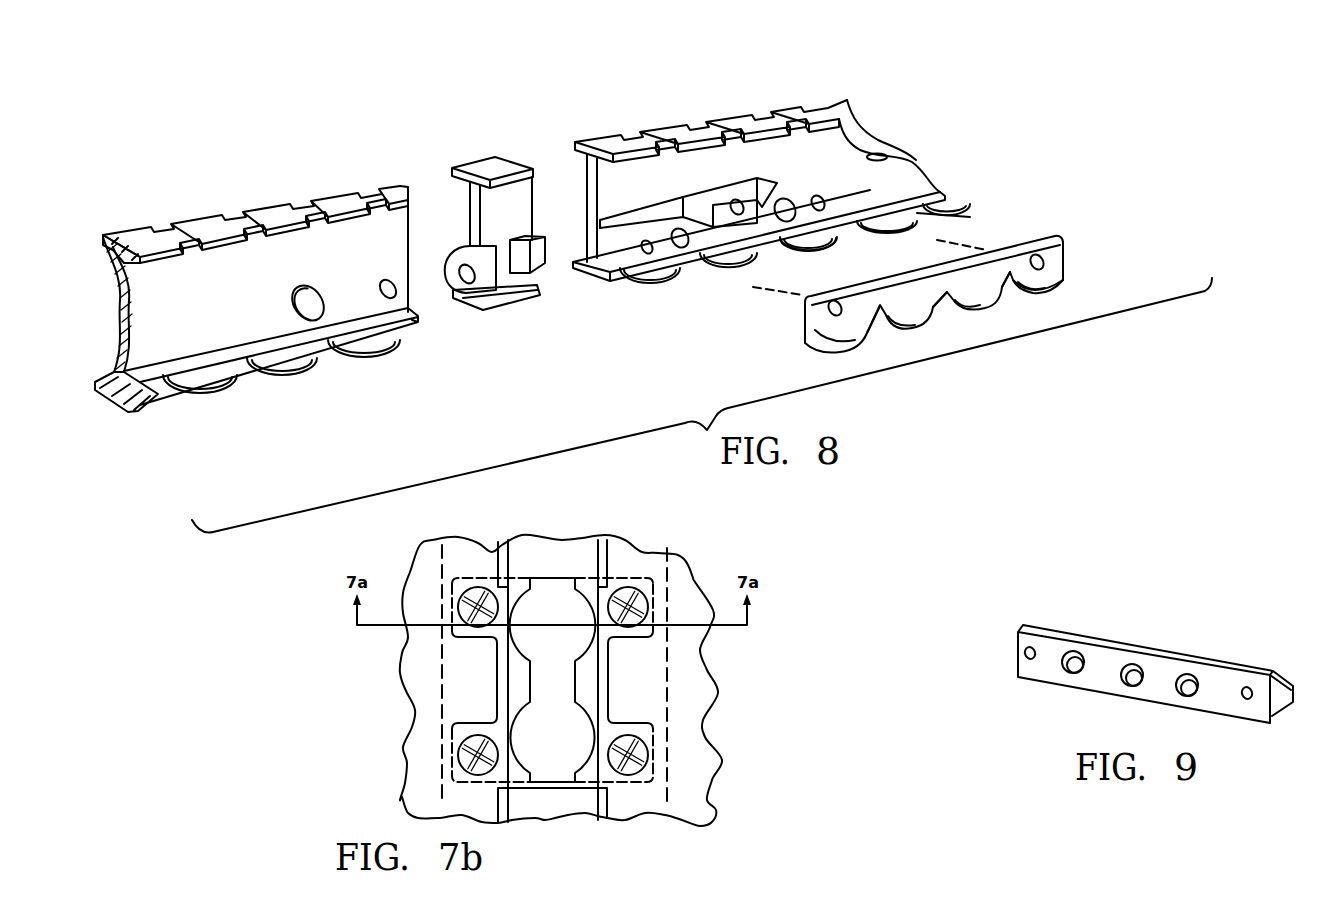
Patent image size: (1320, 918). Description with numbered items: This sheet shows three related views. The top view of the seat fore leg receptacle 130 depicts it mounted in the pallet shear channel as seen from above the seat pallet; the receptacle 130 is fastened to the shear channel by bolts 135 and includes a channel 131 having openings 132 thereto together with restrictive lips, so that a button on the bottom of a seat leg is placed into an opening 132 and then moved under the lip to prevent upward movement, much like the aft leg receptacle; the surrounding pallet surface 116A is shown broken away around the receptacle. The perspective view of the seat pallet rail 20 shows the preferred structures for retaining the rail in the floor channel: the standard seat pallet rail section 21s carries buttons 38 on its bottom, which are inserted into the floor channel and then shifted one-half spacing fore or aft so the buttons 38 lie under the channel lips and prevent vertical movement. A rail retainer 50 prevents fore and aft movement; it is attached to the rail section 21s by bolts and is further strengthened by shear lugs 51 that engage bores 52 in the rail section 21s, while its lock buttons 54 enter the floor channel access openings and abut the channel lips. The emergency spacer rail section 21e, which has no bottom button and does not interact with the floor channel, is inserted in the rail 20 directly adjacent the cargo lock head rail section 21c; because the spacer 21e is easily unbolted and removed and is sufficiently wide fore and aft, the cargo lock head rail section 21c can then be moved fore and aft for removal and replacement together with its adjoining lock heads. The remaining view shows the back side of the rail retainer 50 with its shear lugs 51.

In FIG. 8, the seat pallet rail 20 is at (907, 140).
In FIG. 8, the cargo lock head rail section 21c is at (261, 185).
In FIG. 8, the emergency spacer rail section 21e is at (480, 148).
In FIG. 8, the standard seat pallet rail section 21s is at (757, 86).
In FIG. 8, the buttons 38 is at (815, 241).
In FIG. 8, the rail retainer 50 is at (1053, 226).
In FIG. 9, the rail retainer 50 is at (1184, 639).
In FIG. 8, the bores 52 is at (786, 222).
In FIG. 8, the lock buttons 54 is at (1063, 271).
In FIG. 9, the shear lugs 51 is at (1180, 692).
In FIG. 7b, the panel 116A is at (590, 550).
In FIG. 7b, the fore leg receptacle 130 is at (452, 667).
In FIG. 7b, the channel 131 is at (520, 687).
In FIG. 7b, the openings 132 is at (525, 643).
In FIG. 7b, the bolts 135 is at (478, 592).